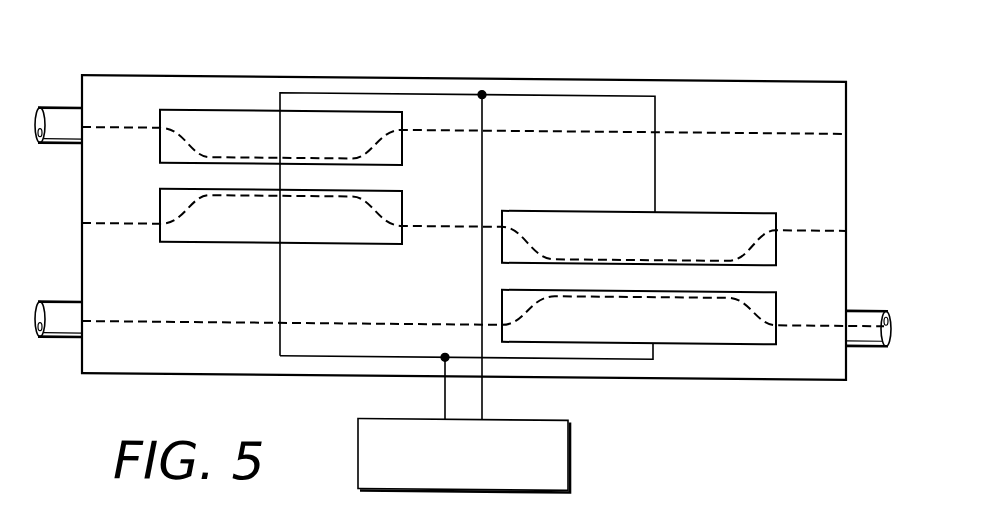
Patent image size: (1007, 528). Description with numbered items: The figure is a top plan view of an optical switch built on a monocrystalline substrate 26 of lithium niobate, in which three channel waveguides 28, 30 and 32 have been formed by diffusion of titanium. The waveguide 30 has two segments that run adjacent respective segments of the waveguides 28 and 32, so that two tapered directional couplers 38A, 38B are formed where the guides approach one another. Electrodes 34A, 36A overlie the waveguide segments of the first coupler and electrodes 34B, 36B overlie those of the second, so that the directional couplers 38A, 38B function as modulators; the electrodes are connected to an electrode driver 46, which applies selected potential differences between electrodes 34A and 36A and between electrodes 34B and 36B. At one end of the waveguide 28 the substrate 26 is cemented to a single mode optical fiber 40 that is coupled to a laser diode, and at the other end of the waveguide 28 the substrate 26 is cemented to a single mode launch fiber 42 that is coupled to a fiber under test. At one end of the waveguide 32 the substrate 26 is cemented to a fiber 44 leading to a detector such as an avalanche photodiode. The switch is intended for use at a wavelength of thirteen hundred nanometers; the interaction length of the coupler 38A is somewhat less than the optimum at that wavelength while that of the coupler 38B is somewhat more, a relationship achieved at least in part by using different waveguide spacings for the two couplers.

The monocrystalline substrate 26 is at (676, 74).
The channel waveguide 28 is at (811, 317).
The channel waveguide 30 is at (818, 224).
The channel waveguide 32 is at (795, 128).
The electrode 34A is at (252, 242).
The electrode 34B is at (672, 339).
The electrode 36A is at (188, 109).
The electrode 36B is at (599, 205).
The tapered directional coupler 38A is at (252, 98).
The tapered directional coupler 38B is at (727, 344).
The single mode optical fiber 40 is at (65, 338).
The single mode launch fiber 42 is at (862, 340).
The fiber 44 is at (62, 108).
The electrode driver 46 is at (358, 446).